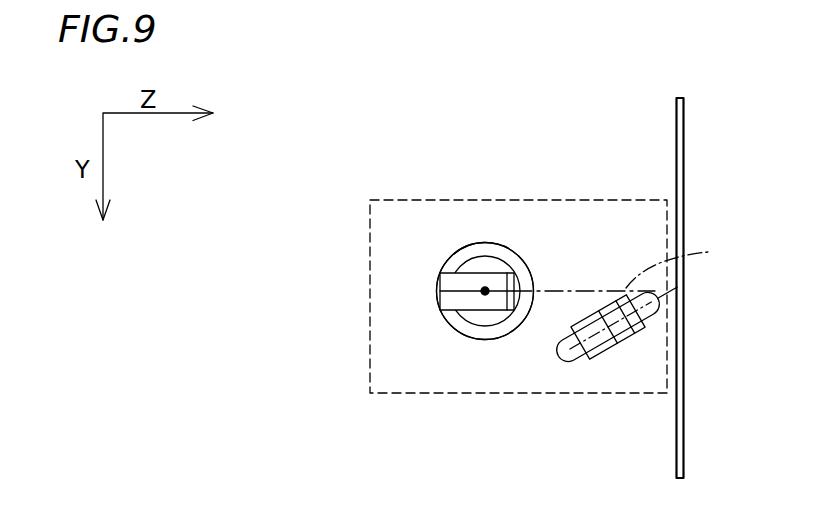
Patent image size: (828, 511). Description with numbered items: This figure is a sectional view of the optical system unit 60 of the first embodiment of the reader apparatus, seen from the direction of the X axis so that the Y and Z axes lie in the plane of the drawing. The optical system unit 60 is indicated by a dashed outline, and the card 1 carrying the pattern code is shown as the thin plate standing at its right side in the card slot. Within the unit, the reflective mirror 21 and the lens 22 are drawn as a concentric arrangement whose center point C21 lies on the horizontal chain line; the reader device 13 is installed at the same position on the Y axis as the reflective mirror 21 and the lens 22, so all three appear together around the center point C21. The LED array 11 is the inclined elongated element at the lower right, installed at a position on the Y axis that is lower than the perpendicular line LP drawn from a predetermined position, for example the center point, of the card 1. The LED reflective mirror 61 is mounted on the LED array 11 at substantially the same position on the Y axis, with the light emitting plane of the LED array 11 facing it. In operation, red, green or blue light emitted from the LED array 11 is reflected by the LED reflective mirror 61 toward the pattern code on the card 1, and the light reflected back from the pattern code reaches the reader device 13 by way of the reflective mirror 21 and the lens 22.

The card 1 is at (684, 208).
The LED array 11 is at (558, 355).
The reader device 13 is at (448, 257).
The reflective mirror 21 is at (500, 273).
The lens 22 is at (467, 257).
The optical system unit 60 is at (370, 355).
The LED reflective mirror 61 is at (602, 362).
The center point of reflective mirror C21 is at (440, 291).
The perpendicular line LP is at (683, 264).